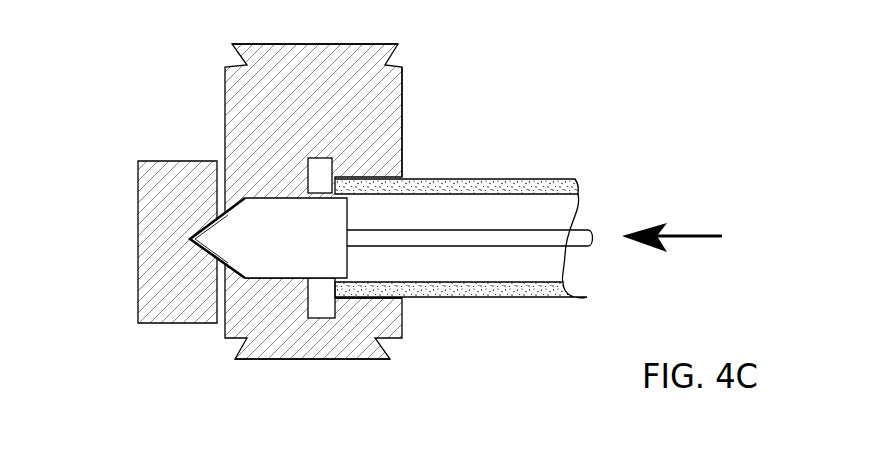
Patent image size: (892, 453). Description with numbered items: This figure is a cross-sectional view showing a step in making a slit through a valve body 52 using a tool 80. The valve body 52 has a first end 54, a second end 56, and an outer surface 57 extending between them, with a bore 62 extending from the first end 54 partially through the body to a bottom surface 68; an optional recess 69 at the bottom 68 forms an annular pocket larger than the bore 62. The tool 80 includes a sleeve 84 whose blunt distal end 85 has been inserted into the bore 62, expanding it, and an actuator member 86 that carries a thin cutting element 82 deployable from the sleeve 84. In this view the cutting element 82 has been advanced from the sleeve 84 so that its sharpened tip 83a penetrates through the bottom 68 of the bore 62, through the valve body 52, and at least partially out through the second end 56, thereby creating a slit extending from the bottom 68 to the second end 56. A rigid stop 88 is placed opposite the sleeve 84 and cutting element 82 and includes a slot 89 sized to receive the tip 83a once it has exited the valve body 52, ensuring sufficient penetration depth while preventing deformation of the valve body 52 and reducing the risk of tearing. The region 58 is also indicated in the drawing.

The valve body 52 is at (324, 209).
The first end 54 is at (402, 93).
The second end 56 is at (225, 85).
The outer surface 57 is at (292, 44).
The housing bottom portion 58 is at (236, 340).
The bore 62 is at (368, 299).
The bottom surface 68 is at (322, 284).
The recess 69 is at (322, 310).
The distal end 85 is at (308, 192).
The tool 80 is at (349, 212).
The cutting element 82 is at (348, 219).
The sleeve 84 is at (537, 298).
The actuator member 86 is at (582, 231).
The rigid stop 88 is at (139, 178).
The slot 89 is at (193, 237).
The sharpened tip 83a is at (197, 241).